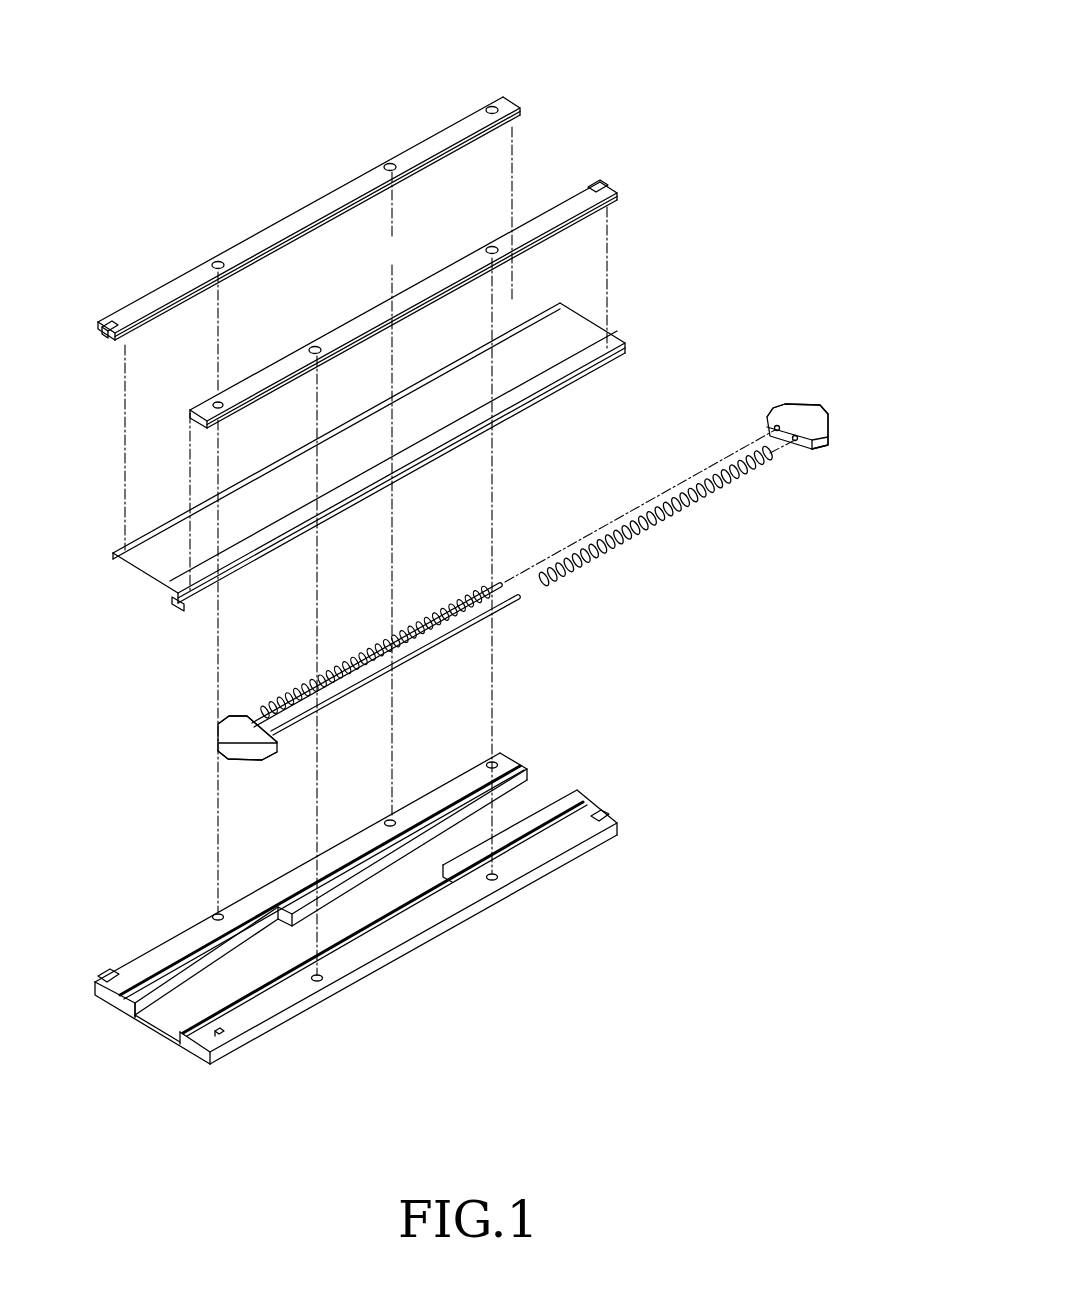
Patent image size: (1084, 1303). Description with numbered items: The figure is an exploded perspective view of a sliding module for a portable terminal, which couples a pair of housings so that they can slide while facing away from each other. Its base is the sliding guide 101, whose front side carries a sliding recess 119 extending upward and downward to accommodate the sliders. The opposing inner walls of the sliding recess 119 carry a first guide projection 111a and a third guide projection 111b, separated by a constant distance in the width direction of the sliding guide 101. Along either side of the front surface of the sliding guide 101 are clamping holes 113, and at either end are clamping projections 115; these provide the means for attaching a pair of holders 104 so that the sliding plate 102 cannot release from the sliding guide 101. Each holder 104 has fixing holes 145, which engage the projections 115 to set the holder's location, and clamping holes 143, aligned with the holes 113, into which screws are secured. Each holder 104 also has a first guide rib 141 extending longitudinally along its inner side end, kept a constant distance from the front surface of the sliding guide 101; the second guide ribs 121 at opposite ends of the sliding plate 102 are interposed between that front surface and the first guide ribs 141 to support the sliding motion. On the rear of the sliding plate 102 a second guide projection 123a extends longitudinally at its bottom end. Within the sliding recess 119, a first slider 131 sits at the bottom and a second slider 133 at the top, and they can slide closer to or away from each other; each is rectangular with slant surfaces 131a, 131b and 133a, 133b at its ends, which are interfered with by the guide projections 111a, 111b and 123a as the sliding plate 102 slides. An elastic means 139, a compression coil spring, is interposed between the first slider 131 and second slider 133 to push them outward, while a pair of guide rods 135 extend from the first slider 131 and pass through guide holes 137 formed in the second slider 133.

The sliding guide 101 is at (167, 1056).
The sliding plate 102 is at (137, 610).
The holders 104 is at (292, 194).
The first guide projection 111a is at (573, 797).
The third guide projection 111b is at (178, 968).
The clamping holes 113 is at (215, 914).
The clamping projections 115 is at (107, 973).
The sliding recess 119 is at (155, 1020).
The second guide ribs 121 is at (113, 551).
The second guide projection 123a is at (177, 604).
The first slider 131 is at (222, 752).
The slant surface 131a is at (250, 762).
The slant surface 131b is at (216, 725).
The second slider 133 is at (812, 414).
The slant surface 133a is at (830, 420).
The slant surface 133b is at (789, 404).
The guide rods 135 is at (500, 583).
The guide holes 137 is at (774, 426).
The elastic means 139 is at (358, 655).
The first guide ribs 141 is at (462, 140).
The clamping holes 143 is at (388, 165).
The fixing holes 145 is at (492, 106).